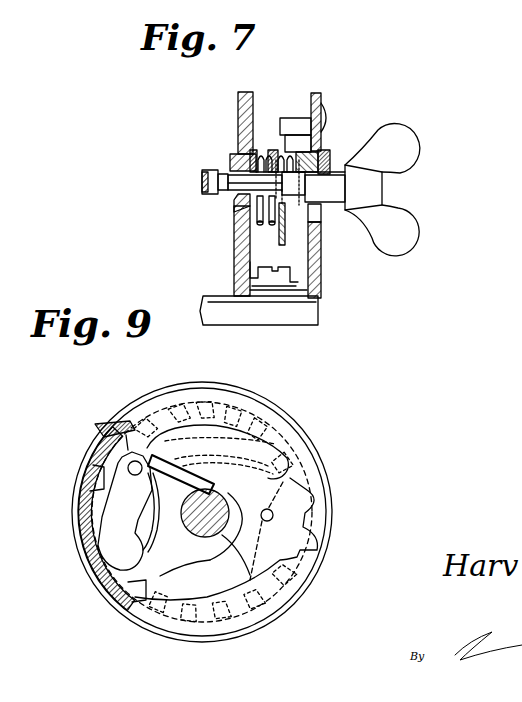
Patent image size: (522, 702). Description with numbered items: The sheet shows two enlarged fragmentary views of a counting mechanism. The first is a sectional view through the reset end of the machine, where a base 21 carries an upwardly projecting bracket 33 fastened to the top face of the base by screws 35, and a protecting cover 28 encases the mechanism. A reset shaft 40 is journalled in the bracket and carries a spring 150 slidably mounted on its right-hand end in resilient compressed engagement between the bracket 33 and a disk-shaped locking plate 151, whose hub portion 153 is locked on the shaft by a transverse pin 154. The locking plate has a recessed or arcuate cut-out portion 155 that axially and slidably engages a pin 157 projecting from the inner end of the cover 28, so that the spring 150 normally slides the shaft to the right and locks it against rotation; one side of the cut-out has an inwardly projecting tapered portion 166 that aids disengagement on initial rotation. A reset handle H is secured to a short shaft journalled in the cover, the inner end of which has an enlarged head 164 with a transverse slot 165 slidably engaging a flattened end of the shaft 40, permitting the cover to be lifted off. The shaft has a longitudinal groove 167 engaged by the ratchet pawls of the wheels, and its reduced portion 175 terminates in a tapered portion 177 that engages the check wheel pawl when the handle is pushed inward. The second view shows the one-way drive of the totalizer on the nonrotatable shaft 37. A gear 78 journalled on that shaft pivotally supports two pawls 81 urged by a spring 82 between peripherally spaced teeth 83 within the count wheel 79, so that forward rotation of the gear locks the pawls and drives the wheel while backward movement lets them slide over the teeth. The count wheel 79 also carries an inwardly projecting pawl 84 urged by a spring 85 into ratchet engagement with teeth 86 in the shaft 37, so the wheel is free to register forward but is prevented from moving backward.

In FIG. 7, the base 21 is at (274, 318).
In FIG. 7, the protecting cover 28 is at (314, 92).
In FIG. 7, the bracket 33 is at (238, 101).
In FIG. 7, the screws 35 is at (253, 274).
In FIG. 9, the shaft 37 is at (188, 532).
In FIG. 7, the shaft 40 is at (208, 170).
In FIG. 9, the gear 78 is at (268, 630).
In FIG. 9, the count wheel 79 is at (104, 437).
In FIG. 9, the pawls 81 is at (125, 502).
In FIG. 9, the spring 82 is at (320, 458).
In FIG. 9, the teeth 83 is at (80, 522).
In FIG. 9, the pawl 84 is at (184, 478).
In FIG. 9, the spring 85 is at (283, 446).
In FIG. 9, the teeth 86 is at (225, 538).
In FIG. 7, the spring 150 is at (248, 234).
In FIG. 7, the locking plate 151 is at (310, 244).
In FIG. 7, the hub portion 153 is at (284, 232).
In FIG. 7, the transverse pin 154 is at (252, 160).
In FIG. 7, the recessed portion 155 is at (321, 128).
In FIG. 7, the pin 157 is at (320, 112).
In FIG. 7, the enlarged head 164 is at (320, 161).
In FIG. 7, the slot 165 is at (316, 143).
In FIG. 7, the tapered portion 166 is at (292, 118).
In FIG. 7, the groove 167 is at (202, 182).
In FIG. 7, the reduced portion 175 is at (222, 194).
In FIG. 7, the tapered portion 177 is at (242, 206).
In FIG. 7, the reset handle H is at (414, 131).